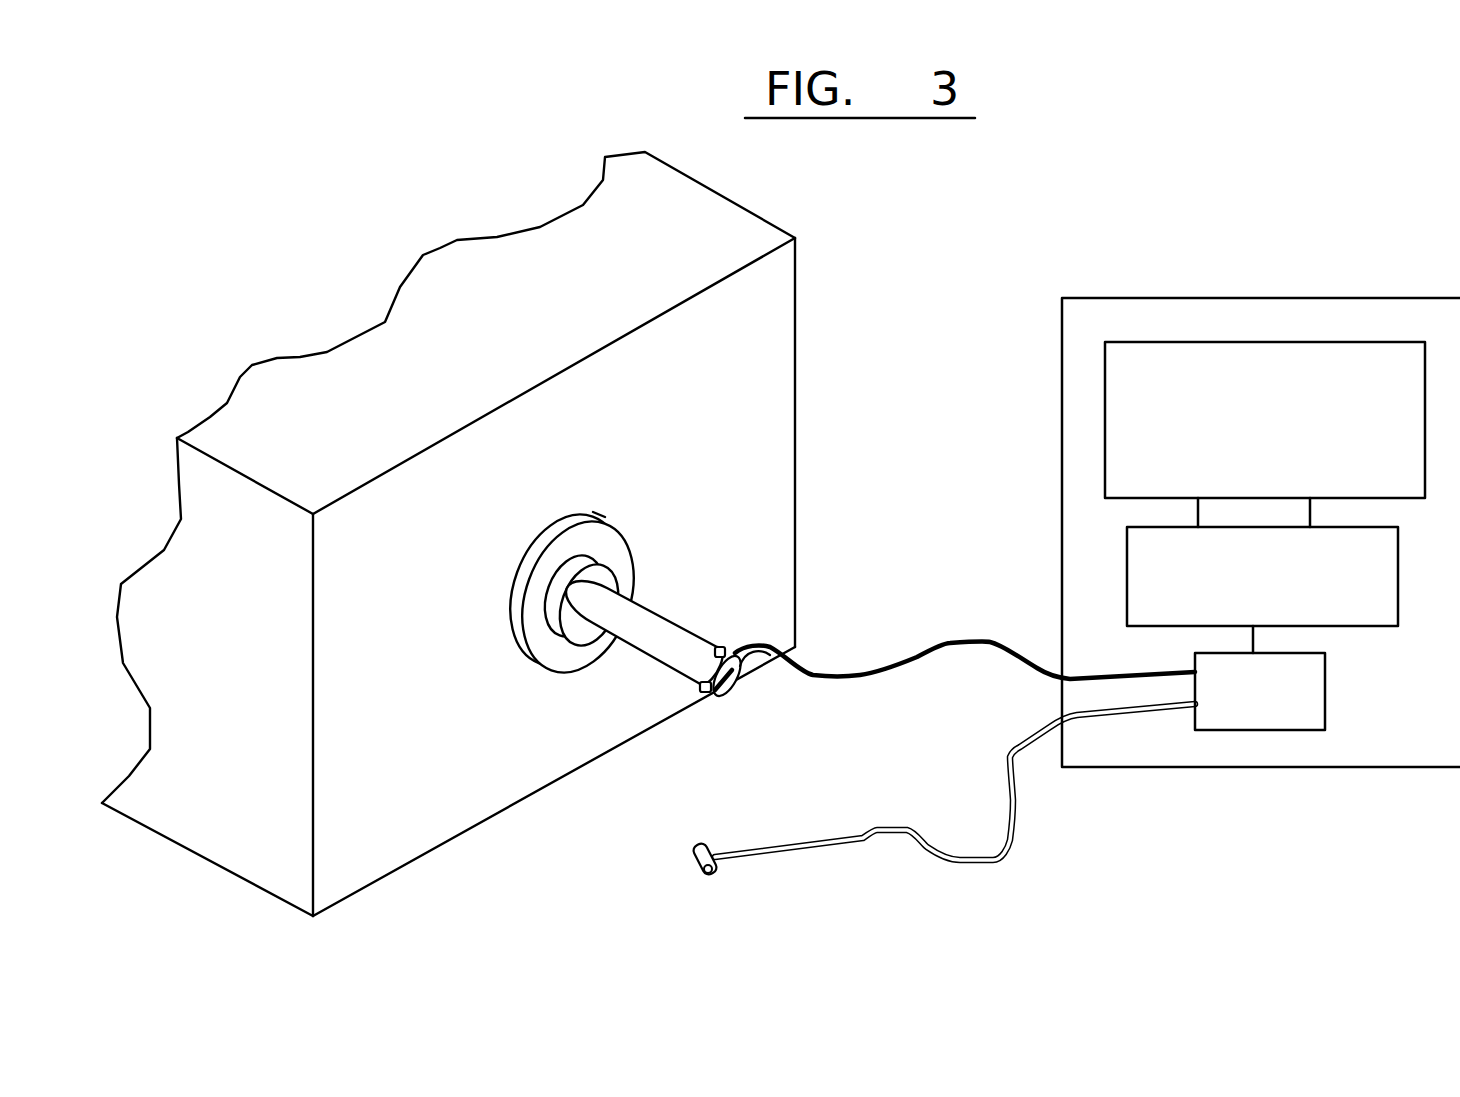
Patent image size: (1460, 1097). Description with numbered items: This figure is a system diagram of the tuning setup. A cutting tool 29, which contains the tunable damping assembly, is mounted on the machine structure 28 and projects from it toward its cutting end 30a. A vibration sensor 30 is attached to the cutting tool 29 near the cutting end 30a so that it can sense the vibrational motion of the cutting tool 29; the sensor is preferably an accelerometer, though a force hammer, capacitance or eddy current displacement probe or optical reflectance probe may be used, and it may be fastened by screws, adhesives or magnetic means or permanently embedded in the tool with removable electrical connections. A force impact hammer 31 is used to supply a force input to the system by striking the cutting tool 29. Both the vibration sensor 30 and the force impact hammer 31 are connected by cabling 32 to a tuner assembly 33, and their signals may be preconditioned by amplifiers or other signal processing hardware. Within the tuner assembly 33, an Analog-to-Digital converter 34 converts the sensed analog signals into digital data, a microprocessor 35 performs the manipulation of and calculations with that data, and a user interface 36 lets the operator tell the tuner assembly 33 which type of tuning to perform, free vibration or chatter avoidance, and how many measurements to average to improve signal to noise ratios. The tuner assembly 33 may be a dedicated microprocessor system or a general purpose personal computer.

The machine structure 28 is at (715, 452).
The cutting tool 29 is at (661, 616).
The vibration sensor 30 is at (725, 647).
The cutting end 30a is at (742, 667).
The force impact hammer 31 is at (767, 859).
The cabling 32 is at (1007, 653).
The tuner assembly 33 is at (1120, 298).
The Analog-to-Digital converter 34 is at (1307, 678).
The microprocessor 35 is at (1377, 550).
The user interface 36 is at (1408, 399).